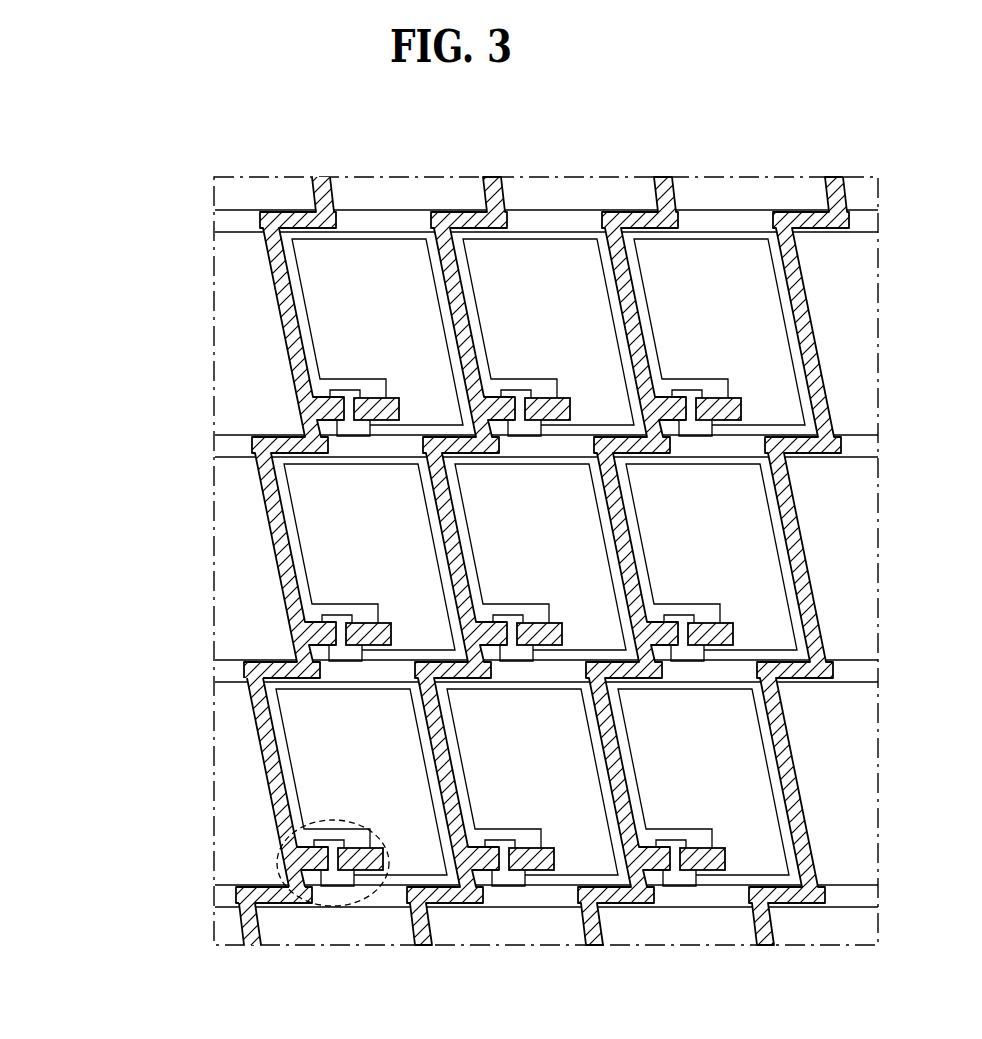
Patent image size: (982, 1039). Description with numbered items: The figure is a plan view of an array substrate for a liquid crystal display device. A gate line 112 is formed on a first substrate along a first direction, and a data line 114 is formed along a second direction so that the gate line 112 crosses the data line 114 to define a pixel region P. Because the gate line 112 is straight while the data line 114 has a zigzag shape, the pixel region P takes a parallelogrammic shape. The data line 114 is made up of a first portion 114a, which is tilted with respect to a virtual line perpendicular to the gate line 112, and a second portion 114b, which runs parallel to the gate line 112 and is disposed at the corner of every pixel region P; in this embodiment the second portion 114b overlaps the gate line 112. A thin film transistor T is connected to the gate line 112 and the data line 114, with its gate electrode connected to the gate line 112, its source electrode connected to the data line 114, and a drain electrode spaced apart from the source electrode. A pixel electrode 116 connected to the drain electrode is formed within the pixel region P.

The gate line 112 is at (533, 897).
The data line 114 is at (183, 561).
The first portion 114a is at (273, 808).
The second portion 114b is at (243, 882).
The pixel electrode 116 is at (283, 732).
The pixel region P is at (330, 783).
The thin film transistor T is at (358, 900).